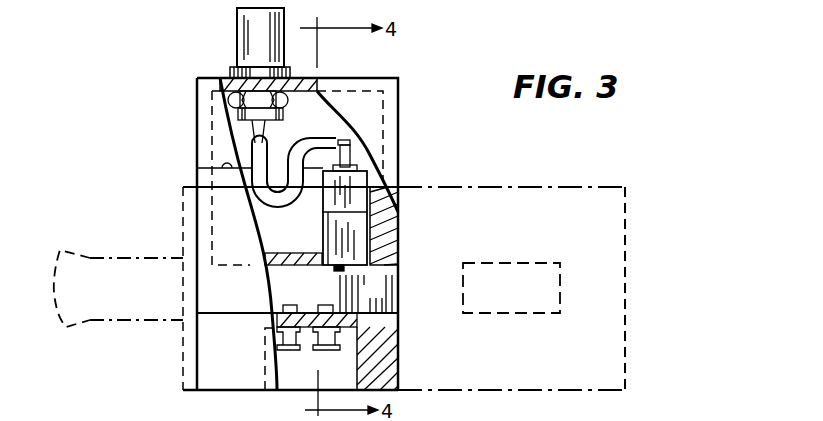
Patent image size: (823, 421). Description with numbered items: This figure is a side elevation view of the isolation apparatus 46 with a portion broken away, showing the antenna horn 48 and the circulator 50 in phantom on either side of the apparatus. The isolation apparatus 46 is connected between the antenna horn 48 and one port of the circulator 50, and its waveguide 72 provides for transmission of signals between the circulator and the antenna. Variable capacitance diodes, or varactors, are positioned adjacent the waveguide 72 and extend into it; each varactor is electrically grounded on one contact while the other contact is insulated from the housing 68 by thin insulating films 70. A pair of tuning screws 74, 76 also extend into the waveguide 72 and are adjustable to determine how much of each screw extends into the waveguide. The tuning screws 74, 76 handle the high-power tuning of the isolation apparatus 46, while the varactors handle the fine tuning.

The isolation apparatus 46 is at (192, 137).
The antenna horn 48 is at (106, 257).
The circulator 50 is at (590, 187).
The housing 68 is at (362, 166).
The thin insulating films 70 is at (343, 270).
The waveguide 72 is at (398, 302).
The tuning screw 74 is at (276, 306).
The tuning screw 76 is at (319, 312).